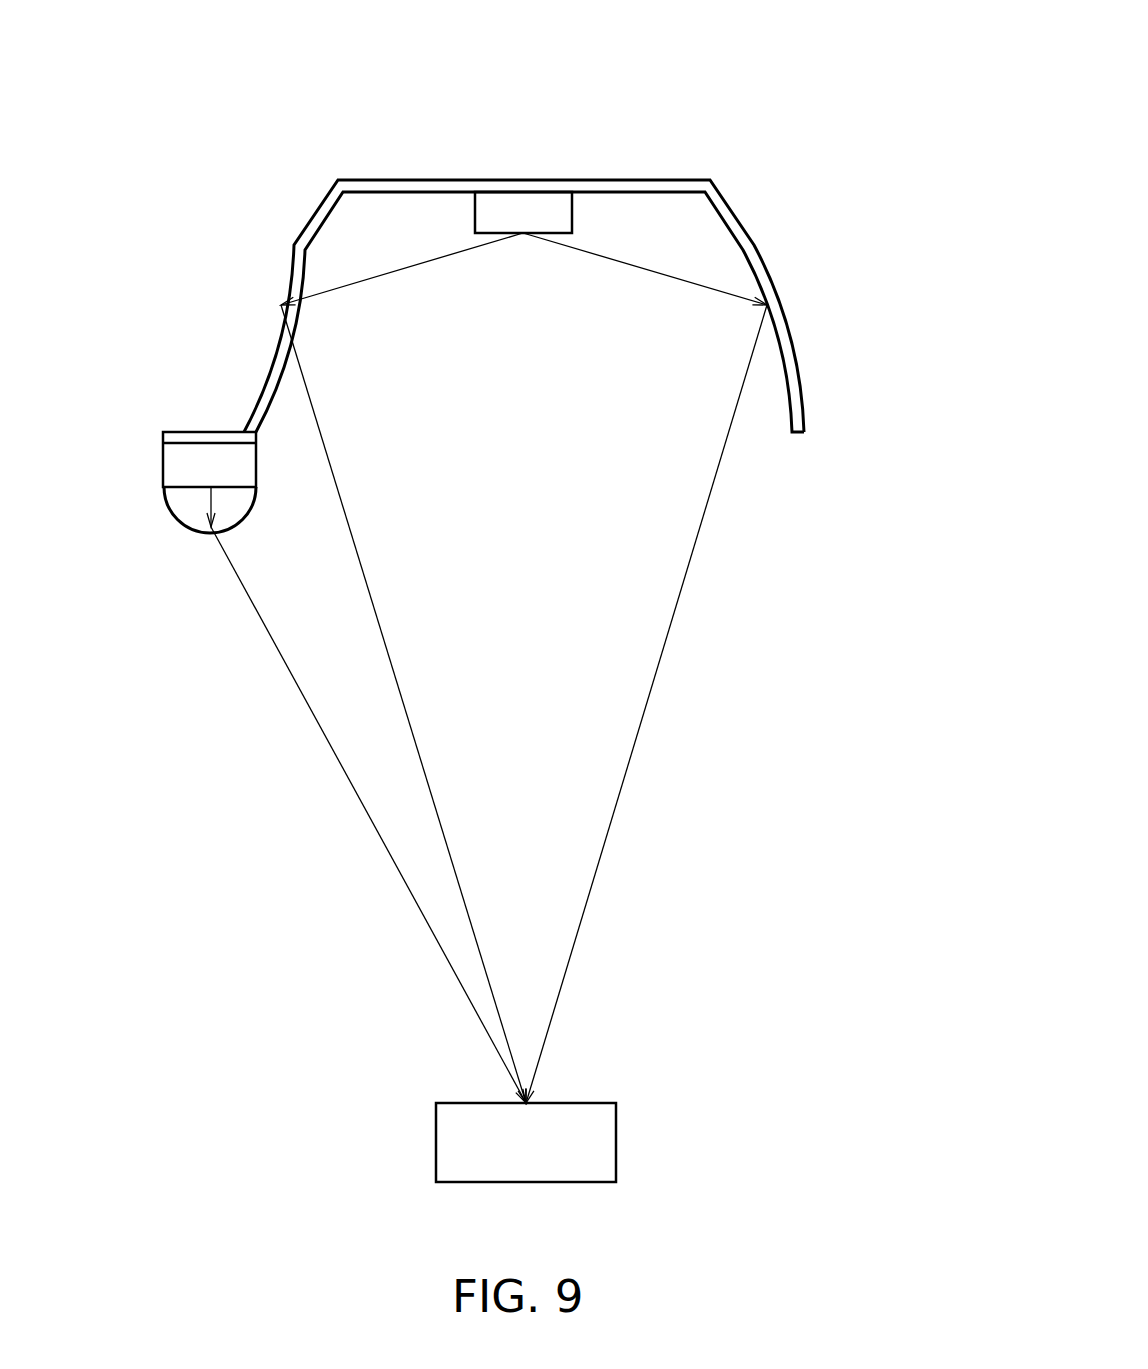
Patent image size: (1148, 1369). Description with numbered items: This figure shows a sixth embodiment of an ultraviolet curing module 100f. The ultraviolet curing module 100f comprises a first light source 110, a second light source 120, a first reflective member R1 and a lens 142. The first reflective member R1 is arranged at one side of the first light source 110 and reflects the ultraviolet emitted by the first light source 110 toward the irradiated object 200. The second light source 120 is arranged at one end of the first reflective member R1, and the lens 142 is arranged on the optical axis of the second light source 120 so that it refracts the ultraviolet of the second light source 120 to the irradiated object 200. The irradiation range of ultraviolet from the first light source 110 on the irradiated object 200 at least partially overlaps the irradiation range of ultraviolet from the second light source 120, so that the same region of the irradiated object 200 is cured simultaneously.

The ultraviolet curing module 100f is at (577, 225).
The first light source 110 is at (523, 212).
The second light source 120 is at (209, 479).
The lens 142 is at (187, 515).
The irradiated object 200 is at (526, 1142).
The first reflective member R1 is at (745, 237).